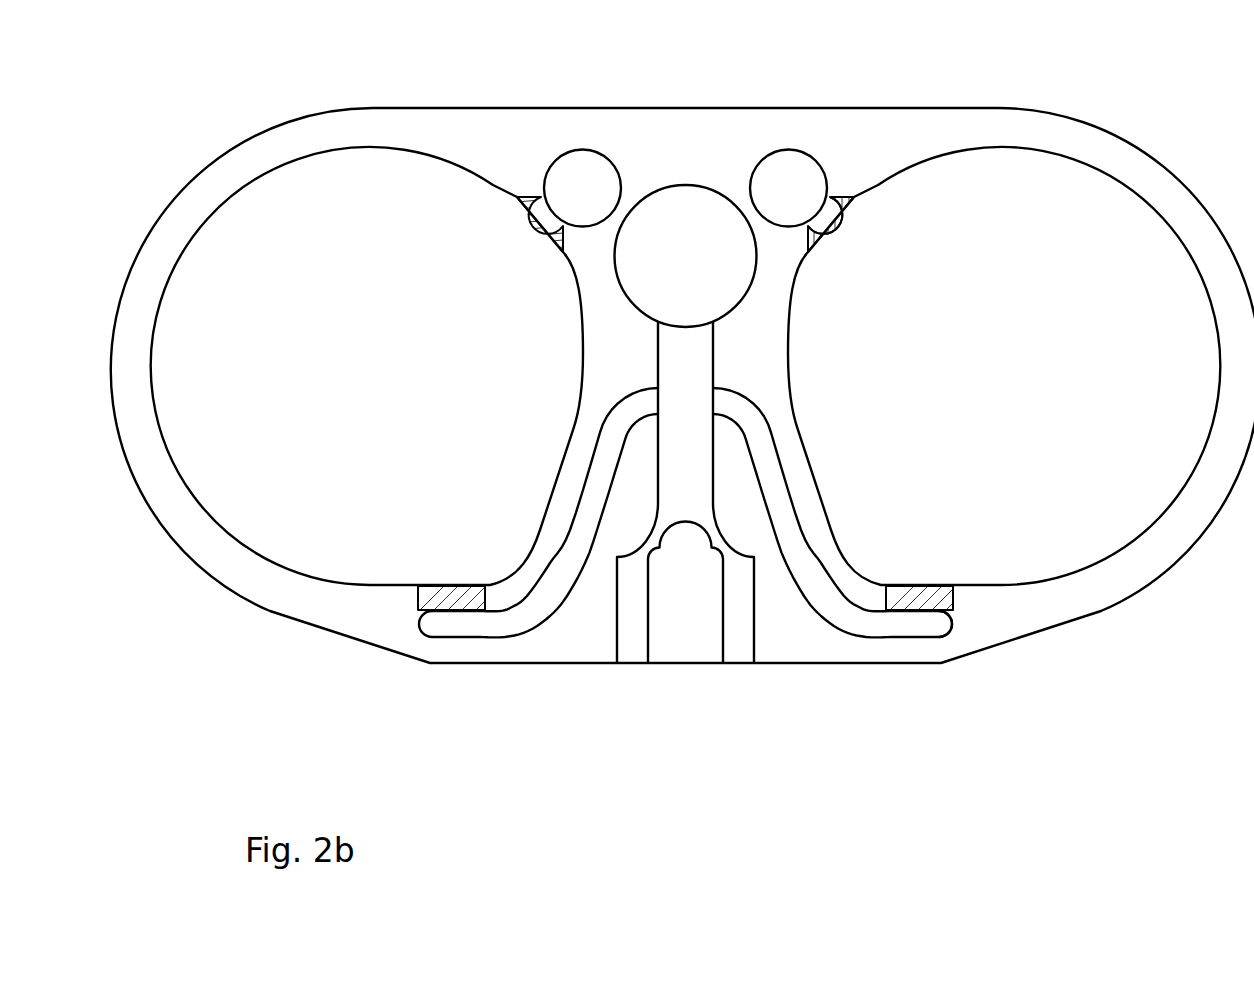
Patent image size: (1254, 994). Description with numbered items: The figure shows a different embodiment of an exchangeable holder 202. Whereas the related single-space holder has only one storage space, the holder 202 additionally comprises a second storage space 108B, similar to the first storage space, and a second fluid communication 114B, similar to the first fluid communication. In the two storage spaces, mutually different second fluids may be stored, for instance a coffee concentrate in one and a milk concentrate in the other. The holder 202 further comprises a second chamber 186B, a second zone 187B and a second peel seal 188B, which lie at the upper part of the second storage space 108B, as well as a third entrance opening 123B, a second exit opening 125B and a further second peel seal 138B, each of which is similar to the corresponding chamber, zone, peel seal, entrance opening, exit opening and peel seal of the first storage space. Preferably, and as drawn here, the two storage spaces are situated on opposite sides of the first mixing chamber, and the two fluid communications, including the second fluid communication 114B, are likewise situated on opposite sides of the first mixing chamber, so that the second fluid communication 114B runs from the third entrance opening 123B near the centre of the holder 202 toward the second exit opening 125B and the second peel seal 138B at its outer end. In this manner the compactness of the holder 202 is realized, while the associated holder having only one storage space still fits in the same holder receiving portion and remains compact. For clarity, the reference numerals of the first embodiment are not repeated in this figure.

The holder 202 is at (232, 681).
The second storage space 108B is at (1048, 205).
The second chamber 186B is at (785, 172).
The second zone 187B is at (837, 202).
The second peel seal 188B is at (852, 205).
The third entrance opening 123B is at (713, 401).
The second exit opening 125B is at (923, 586).
The second fluid communication 114B is at (808, 580).
The second peel seal 138B is at (942, 597).